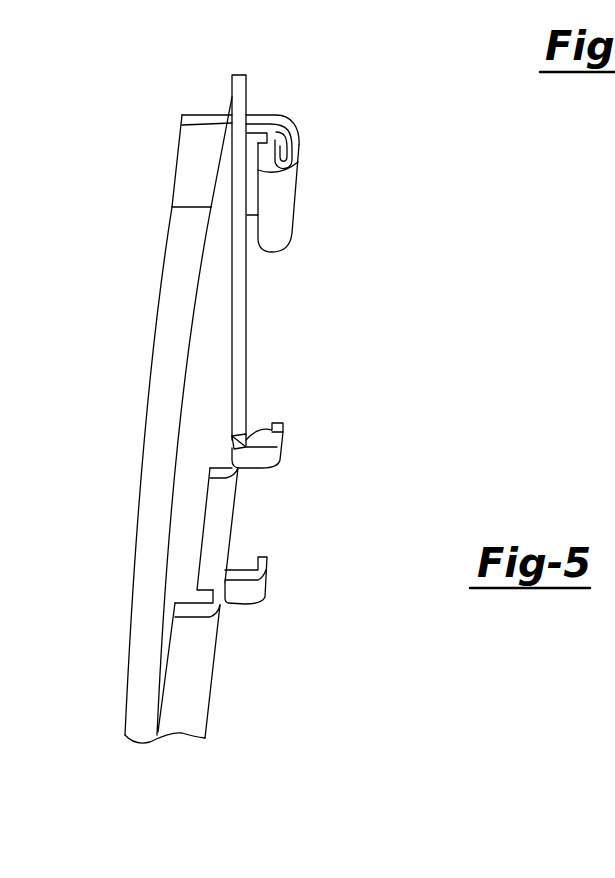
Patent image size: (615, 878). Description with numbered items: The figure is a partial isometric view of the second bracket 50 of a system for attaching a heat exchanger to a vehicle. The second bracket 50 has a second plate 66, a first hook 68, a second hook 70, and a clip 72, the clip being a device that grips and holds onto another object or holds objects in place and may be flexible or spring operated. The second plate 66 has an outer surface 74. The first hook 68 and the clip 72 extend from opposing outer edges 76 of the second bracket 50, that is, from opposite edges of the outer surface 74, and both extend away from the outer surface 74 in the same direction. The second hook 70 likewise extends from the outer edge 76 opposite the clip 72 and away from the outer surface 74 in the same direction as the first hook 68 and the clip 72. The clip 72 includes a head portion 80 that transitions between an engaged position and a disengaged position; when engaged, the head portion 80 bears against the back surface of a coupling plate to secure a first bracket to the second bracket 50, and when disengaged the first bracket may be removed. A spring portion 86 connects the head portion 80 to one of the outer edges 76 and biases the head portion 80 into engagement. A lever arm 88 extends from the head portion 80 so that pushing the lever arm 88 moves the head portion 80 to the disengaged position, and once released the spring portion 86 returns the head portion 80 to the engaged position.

The second bracket 50 is at (120, 68).
The second plate 66 is at (222, 310).
The first hook 68 is at (258, 458).
The second hook 70 is at (240, 593).
The clip 72 is at (305, 182).
The outer surface 74 is at (247, 338).
The outer edges 76 is at (228, 100).
The head portion 80 is at (293, 223).
The spring portion 86 is at (252, 128).
The lever arm 88 is at (198, 156).